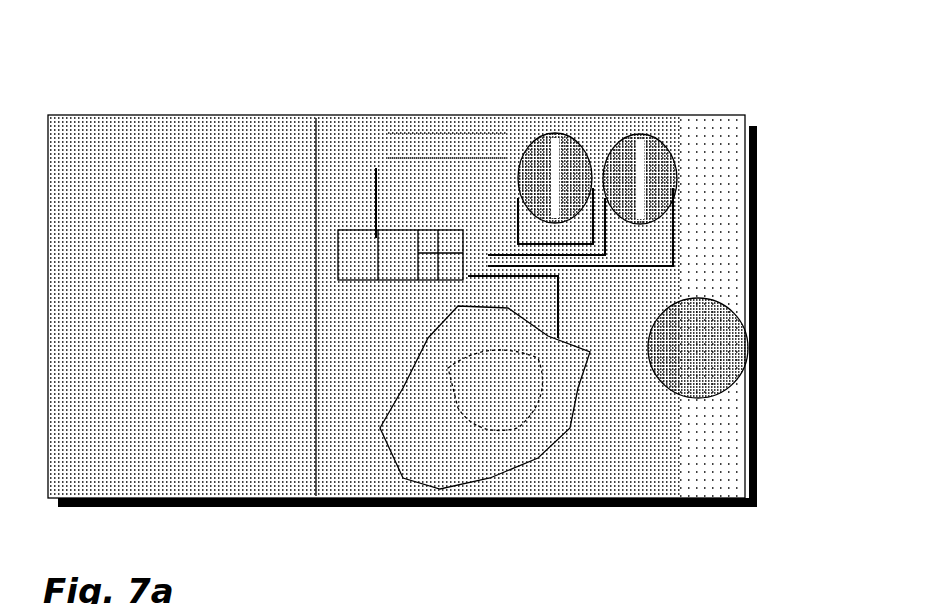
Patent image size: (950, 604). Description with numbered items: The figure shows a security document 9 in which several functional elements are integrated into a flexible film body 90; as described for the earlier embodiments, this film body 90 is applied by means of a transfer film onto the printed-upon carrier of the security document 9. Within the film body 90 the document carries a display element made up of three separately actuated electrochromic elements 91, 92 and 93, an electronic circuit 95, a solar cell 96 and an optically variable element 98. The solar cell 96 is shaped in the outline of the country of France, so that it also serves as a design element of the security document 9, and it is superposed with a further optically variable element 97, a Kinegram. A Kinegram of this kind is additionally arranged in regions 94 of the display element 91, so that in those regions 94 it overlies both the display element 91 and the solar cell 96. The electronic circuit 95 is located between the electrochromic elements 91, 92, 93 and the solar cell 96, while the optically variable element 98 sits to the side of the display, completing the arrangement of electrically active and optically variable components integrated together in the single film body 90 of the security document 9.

The security document 9 is at (441, 303).
The flexible film body 90 is at (346, 478).
The electrochromic element 91 is at (462, 120).
The electrochromic element 92 is at (545, 117).
The electrochromic element 93 is at (641, 122).
The regions of the display element 94 is at (437, 127).
The electronic circuit 95 is at (340, 222).
The solar cell 96 is at (440, 476).
The optically variable element 97 is at (505, 395).
The optically variable element 98 is at (710, 287).